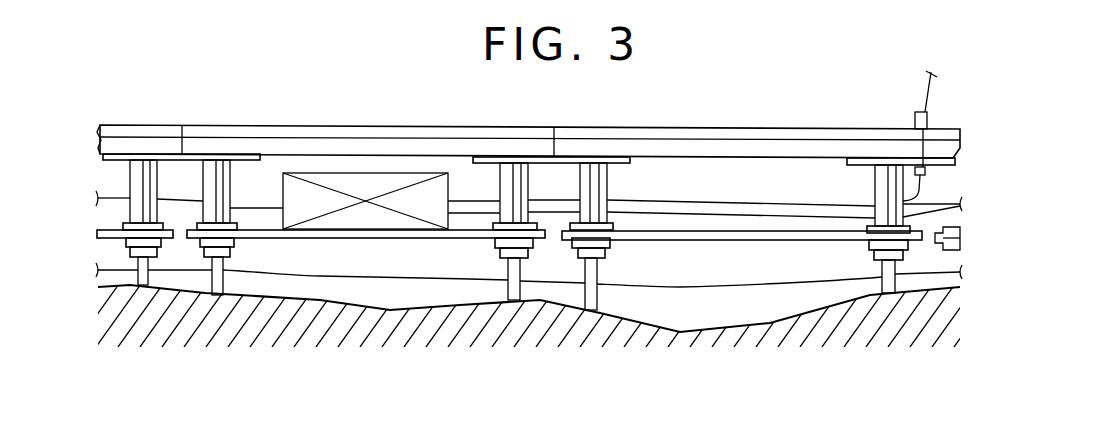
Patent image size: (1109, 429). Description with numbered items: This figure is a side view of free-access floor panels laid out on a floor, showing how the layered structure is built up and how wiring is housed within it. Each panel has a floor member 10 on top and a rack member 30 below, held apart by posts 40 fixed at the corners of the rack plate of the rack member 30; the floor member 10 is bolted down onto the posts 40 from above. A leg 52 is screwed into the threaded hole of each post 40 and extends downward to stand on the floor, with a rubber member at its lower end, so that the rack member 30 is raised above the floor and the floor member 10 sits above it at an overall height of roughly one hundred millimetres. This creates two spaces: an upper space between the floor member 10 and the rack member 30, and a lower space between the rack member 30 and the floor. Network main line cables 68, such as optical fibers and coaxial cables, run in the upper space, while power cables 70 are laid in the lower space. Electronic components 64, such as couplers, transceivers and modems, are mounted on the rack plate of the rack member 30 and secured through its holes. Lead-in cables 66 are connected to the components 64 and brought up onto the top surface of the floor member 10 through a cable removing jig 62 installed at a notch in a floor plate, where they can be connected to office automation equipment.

The floor member 10 is at (316, 127).
The rack member 30 is at (372, 238).
The post 40 is at (211, 186).
The leg 52 is at (598, 301).
The cable removing jig 62 is at (913, 120).
The electronic component 64 is at (364, 190).
The lead-in cable 66 is at (699, 202).
The network main line cable 68 is at (260, 207).
The power cable 70 is at (712, 286).